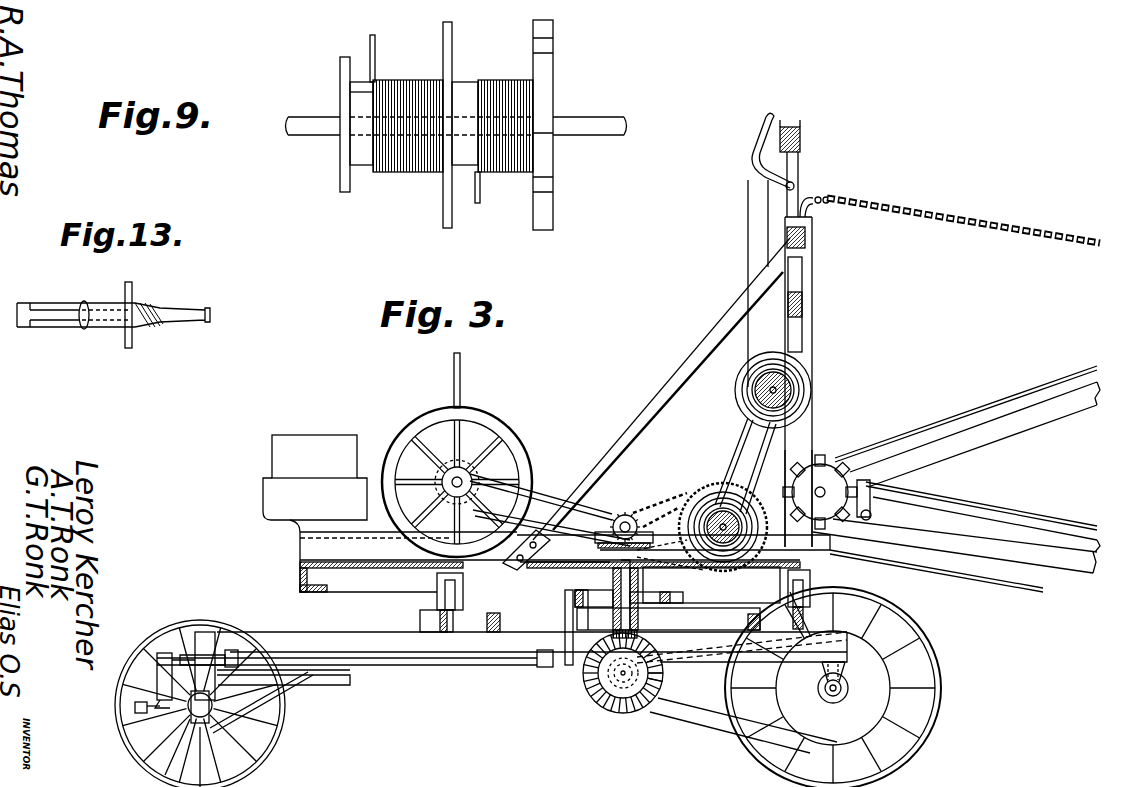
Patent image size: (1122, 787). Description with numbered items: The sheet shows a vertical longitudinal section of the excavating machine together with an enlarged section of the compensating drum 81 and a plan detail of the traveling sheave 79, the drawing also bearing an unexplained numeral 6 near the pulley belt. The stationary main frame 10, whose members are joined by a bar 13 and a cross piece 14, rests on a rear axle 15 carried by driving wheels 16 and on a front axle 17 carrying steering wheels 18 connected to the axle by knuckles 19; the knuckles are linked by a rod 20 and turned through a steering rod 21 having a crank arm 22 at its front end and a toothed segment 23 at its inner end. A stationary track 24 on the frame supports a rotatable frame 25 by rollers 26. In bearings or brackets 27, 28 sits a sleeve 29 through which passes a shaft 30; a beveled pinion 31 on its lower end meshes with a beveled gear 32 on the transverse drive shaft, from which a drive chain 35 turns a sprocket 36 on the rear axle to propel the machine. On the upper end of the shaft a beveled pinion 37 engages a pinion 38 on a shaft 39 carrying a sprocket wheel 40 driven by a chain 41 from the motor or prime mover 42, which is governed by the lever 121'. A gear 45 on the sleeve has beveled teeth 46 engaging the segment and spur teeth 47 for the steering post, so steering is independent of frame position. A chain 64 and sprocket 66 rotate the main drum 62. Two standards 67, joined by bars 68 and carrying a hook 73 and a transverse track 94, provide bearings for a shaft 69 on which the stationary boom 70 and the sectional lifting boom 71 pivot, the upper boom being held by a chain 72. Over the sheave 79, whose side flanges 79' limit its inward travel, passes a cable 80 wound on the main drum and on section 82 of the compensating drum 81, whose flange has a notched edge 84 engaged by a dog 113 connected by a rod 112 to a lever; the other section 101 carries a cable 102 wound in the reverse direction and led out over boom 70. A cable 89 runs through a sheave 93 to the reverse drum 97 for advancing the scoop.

In FIG. 3, the belt 6 is at (743, 466).
In FIG. 3, the main frame 10 is at (281, 625).
In FIG. 3, the bar 13 is at (827, 613).
In FIG. 3, the cross piece 14 is at (216, 663).
In FIG. 3, the rear axle 15 is at (833, 704).
In FIG. 3, the wheels 16 is at (942, 688).
In FIG. 3, the front axle 17 is at (205, 745).
In FIG. 3, the wheels 18 is at (287, 736).
In FIG. 3, the knuckle 19 is at (175, 728).
In FIG. 3, the rod 20 is at (141, 713).
In FIG. 3, the steering rod 21 is at (406, 658).
In FIG. 3, the crank arm 22 is at (160, 666).
In FIG. 3, the toothed segment 23 is at (500, 622).
In FIG. 3, the stationary track 24 is at (440, 617).
In FIG. 3, the rotatable frame 25 is at (535, 567).
In FIG. 3, the rollers 26 is at (463, 600).
In FIG. 3, the bearing or bracket 27 is at (600, 567).
In FIG. 3, the bearing or bracket 28 is at (612, 640).
In FIG. 3, the sleeve 29 is at (640, 586).
In FIG. 3, the shaft 30 is at (660, 622).
In FIG. 3, the beveled pinion 31 is at (660, 652).
In FIG. 3, the beveled gear 32 is at (624, 683).
In FIG. 3, the drive chain 35 is at (720, 746).
In FIG. 3, the sprocket 36 is at (862, 662).
In FIG. 3, the beveled pinion 37 is at (688, 534).
In FIG. 3, the pinion 38 is at (660, 676).
In FIG. 3, the shaft 39 is at (640, 505).
In FIG. 3, the sprocket wheel 40 is at (612, 526).
In FIG. 3, the chain 41 is at (545, 488).
In FIG. 3, the motor or prime mover 42 is at (342, 457).
In FIG. 3, the gear 45 is at (594, 598).
In FIG. 3, the beveled teeth 46 is at (683, 598).
In FIG. 3, the spur teeth 47 is at (568, 600).
In FIG. 3, the main drum 62 is at (711, 585).
In FIG. 3, the chain 64 is at (703, 494).
In FIG. 3, the sprocket 66 is at (691, 482).
In FIG. 3, the standards 67 is at (815, 334).
In FIG. 3, the bars or rods 68 is at (806, 239).
In FIG. 9, the shaft 69 is at (597, 124).
In FIG. 3, the shaft 69 is at (868, 479).
In FIG. 3, the boom 70 is at (1043, 418).
In FIG. 3, the lifting boom 71 is at (1037, 540).
In FIG. 3, the chain 72 is at (973, 222).
In FIG. 3, the hook 73 is at (832, 198).
In FIG. 13, the sheave 79 is at (113, 330).
In FIG. 13, the side flanges 79' is at (149, 309).
In FIG. 9, the cable 80 is at (477, 204).
In FIG. 3, the cable 80 is at (1022, 558).
In FIG. 9, the compensating drum 81 is at (364, 175).
In FIG. 3, the compensating drum 81 is at (825, 470).
In FIG. 9, the drum section 82 is at (462, 88).
In FIG. 9, the notched edge 84 is at (547, 190).
In FIG. 3, the notched edge 84 is at (795, 485).
In FIG. 3, the cable 89 is at (752, 235).
In FIG. 3, the sheave 93 is at (756, 138).
In FIG. 3, the track 94 is at (802, 138).
In FIG. 3, the reverse drum 97 is at (757, 382).
In FIG. 9, the drum section 101 is at (350, 94).
In FIG. 9, the cable 102 is at (376, 53).
In FIG. 3, the cable 102 is at (1000, 400).
In FIG. 3, the rod 112 is at (990, 512).
In FIG. 3, the dog 113 is at (874, 497).
In FIG. 3, the lever 121' is at (457, 455).